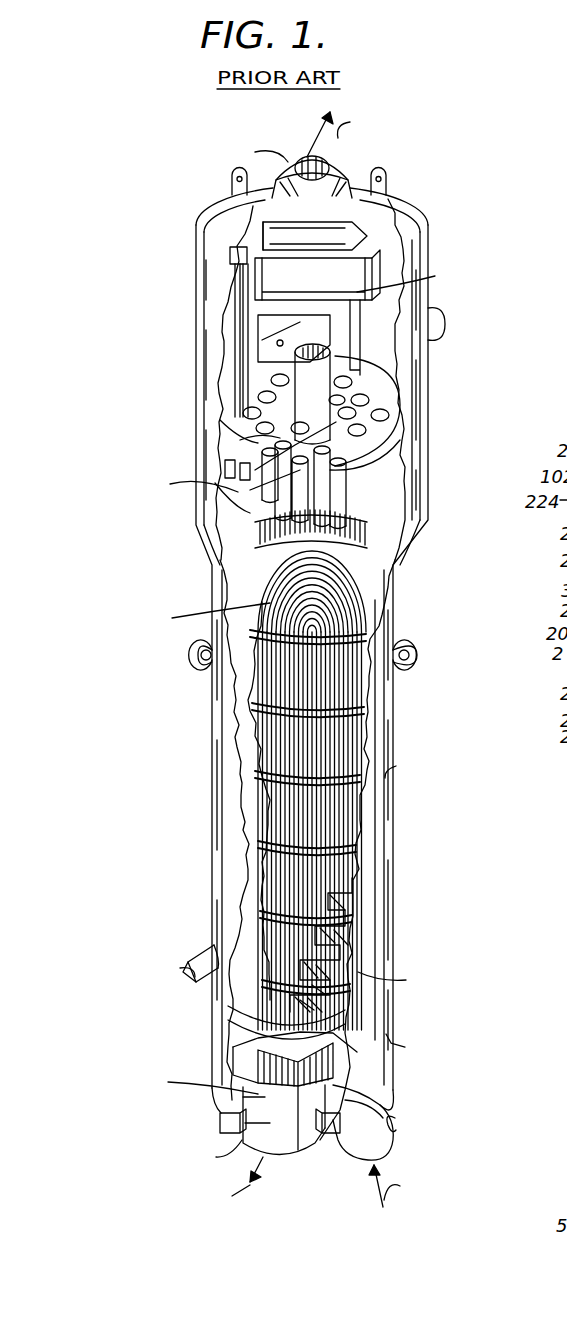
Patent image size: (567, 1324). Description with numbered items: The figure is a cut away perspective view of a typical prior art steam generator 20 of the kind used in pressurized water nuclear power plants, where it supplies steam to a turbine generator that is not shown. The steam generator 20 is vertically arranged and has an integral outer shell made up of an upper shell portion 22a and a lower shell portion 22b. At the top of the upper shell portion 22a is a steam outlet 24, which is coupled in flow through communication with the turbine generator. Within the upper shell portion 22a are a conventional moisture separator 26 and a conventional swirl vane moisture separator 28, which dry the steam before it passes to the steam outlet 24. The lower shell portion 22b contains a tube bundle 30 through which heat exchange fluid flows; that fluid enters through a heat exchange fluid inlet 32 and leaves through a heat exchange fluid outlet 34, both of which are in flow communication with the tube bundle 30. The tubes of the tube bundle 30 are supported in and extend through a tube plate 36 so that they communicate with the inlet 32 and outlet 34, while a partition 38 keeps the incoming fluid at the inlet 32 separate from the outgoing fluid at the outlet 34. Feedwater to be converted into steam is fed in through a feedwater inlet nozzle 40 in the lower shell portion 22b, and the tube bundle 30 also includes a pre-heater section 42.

The steam generator 20 is at (424, 559).
The upper shell portion 22a is at (426, 452).
The lower shell portion 22b is at (398, 745).
The steam outlet 24 is at (296, 168).
The moisture separator 26 is at (357, 278).
The swirl vane moisture separator 28 is at (246, 424).
The tube bundle 30 is at (280, 584).
The heat exchange fluid inlet 32 is at (378, 1136).
The heat exchange fluid outlet 34 is at (245, 1120).
The tube plate 36 is at (360, 1052).
The partition 38 is at (252, 1080).
The feedwater inlet nozzle 40 is at (204, 955).
The pre-heater section 42 is at (362, 945).